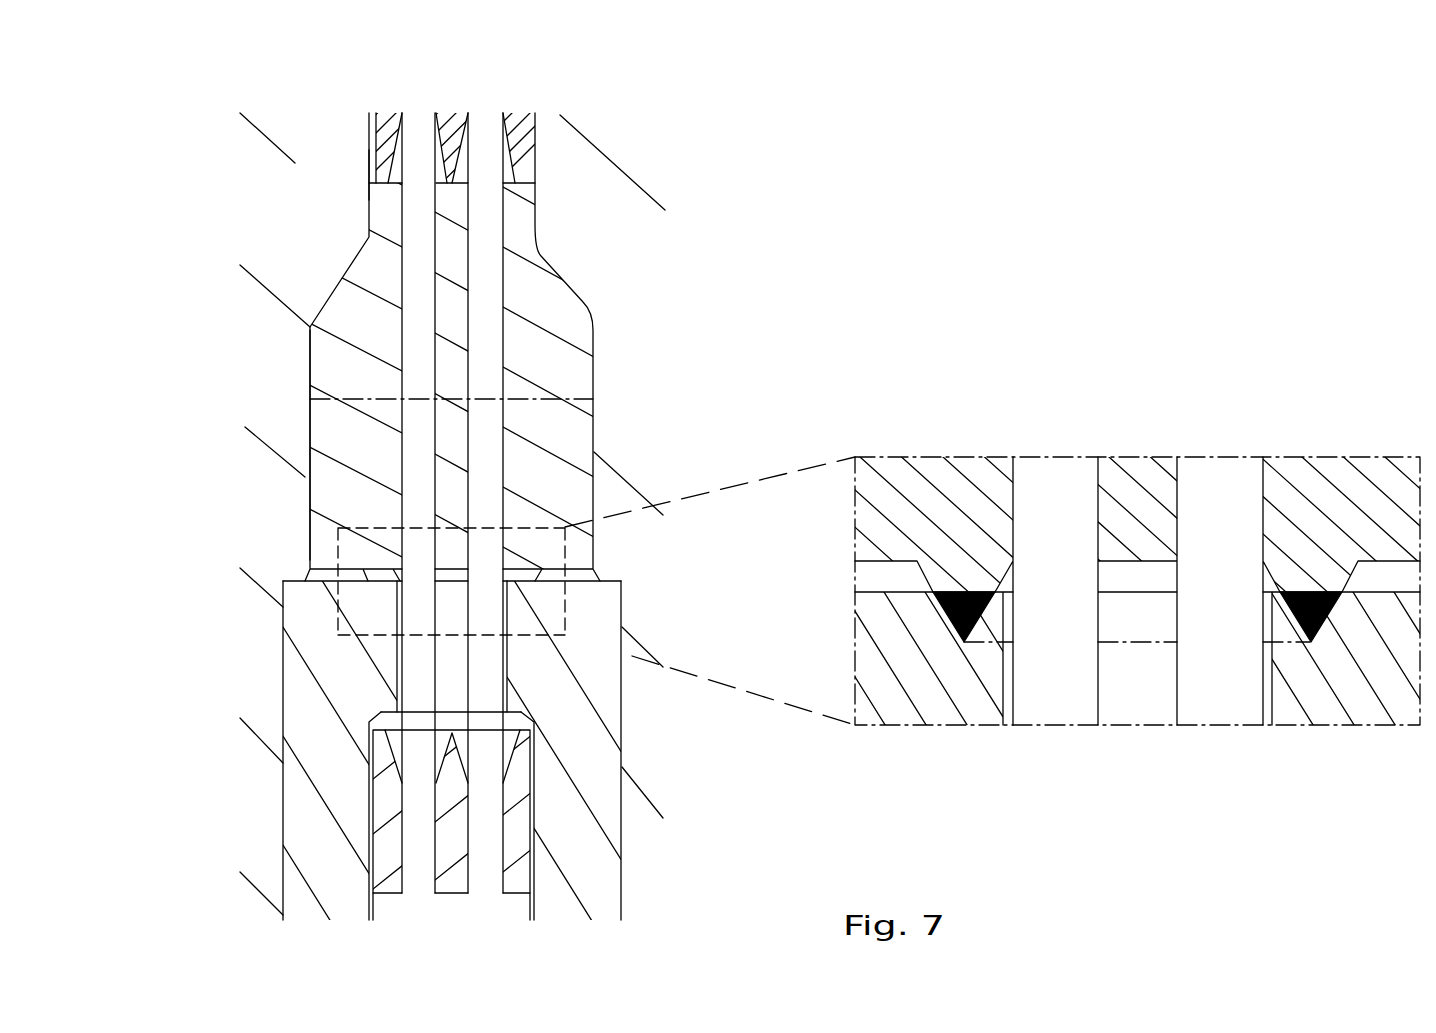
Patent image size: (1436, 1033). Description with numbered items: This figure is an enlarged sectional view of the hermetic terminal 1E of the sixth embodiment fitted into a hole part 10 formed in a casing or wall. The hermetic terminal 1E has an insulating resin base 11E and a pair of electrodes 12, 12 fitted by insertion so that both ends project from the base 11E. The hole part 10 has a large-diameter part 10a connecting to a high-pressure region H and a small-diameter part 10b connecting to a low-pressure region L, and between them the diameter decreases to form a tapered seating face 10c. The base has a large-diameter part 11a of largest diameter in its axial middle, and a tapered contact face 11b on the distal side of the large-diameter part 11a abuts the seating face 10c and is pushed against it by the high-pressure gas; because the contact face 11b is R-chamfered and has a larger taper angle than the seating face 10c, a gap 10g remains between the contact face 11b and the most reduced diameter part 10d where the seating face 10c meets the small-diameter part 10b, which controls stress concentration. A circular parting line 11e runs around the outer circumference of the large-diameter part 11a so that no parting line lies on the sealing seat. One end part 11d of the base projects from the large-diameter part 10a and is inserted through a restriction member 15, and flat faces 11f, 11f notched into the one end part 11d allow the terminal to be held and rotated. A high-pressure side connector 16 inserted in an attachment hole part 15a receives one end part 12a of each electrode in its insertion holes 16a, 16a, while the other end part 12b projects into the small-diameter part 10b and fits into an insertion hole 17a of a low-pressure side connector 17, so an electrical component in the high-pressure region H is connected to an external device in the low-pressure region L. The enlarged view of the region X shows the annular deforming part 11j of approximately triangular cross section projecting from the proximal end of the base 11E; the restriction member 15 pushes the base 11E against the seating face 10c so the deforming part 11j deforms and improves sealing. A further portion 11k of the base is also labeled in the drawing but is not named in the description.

The hole part 10 is at (407, 317).
The large-diameter part 10a is at (305, 513).
The small-diameter part 10b is at (521, 117).
The seating face 10c is at (360, 266).
The most reduced diameter part 10d is at (375, 210).
The gap 10g is at (370, 262).
The large-diameter part 11a is at (318, 370).
The contact face 11b is at (358, 290).
The one end part 11d is at (508, 648).
The parting line 11e is at (553, 400).
The base 11E is at (927, 489).
The flat faces 11f is at (522, 677).
The deforming part 11j is at (945, 611).
The housing side wall 11k is at (367, 457).
The electrode 12 is at (480, 407).
The one end part 12a is at (485, 873).
The other end part 12b is at (494, 119).
The restriction member 15 is at (942, 720).
The attachment hole part 15a is at (537, 782).
The high-pressure side connector 16 is at (513, 892).
The insertion holes 16a is at (438, 857).
The low-pressure side connector 17 is at (387, 120).
The insertion hole 17a is at (433, 135).
The hermetic terminal 1E is at (572, 234).
The low-pressure region L is at (367, 180).
The region X is at (451, 574).
The high-pressure region H is at (515, 722).